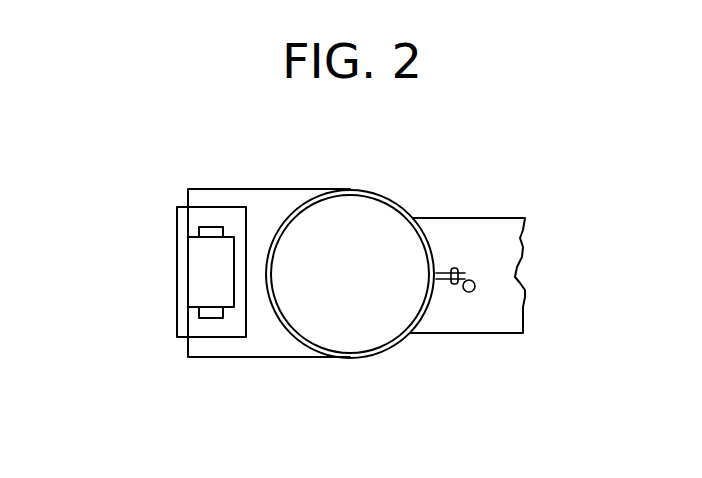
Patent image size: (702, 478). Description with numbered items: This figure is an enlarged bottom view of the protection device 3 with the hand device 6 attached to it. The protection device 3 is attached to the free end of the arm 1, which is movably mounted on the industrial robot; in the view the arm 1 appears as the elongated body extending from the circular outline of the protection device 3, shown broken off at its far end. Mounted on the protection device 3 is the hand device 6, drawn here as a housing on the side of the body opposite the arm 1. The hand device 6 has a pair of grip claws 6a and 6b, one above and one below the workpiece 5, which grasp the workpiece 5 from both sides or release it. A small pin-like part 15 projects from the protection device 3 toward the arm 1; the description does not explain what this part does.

The arm 1 is at (478, 227).
The protection device 3 is at (358, 338).
The workpiece 5 is at (198, 273).
The hand device 6 is at (217, 207).
The grip claw 6a is at (205, 230).
The grip claw 6b is at (198, 310).
The pin 15 is at (475, 282).